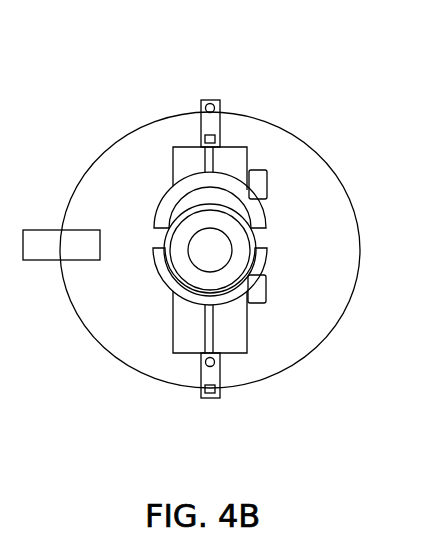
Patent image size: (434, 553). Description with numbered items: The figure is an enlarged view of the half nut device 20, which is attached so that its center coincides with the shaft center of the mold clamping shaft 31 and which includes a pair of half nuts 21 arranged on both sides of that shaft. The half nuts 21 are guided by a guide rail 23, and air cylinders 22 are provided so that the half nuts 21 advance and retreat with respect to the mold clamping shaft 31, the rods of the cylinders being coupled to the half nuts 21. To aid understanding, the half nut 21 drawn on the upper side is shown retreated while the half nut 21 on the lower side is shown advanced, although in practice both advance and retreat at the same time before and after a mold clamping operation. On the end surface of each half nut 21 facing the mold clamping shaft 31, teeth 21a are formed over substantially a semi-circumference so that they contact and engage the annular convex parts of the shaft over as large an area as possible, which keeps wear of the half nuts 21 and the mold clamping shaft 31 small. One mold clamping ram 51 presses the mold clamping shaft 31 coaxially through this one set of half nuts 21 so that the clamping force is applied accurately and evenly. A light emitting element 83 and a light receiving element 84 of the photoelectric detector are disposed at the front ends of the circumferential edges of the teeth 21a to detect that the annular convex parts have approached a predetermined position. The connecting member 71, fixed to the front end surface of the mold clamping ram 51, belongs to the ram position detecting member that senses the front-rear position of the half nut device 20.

The half nut device 20 is at (227, 127).
The half nut 21 is at (227, 175).
The teeth 21a is at (266, 217).
The air cylinder 22 is at (200, 110).
The guide rail 23 is at (172, 168).
The mold clamping shaft 31 is at (178, 263).
The mold clamping ram 51 is at (150, 121).
The connecting member 71 is at (48, 245).
The light emitting element 83 is at (266, 172).
The light receiving element 84 is at (267, 301).